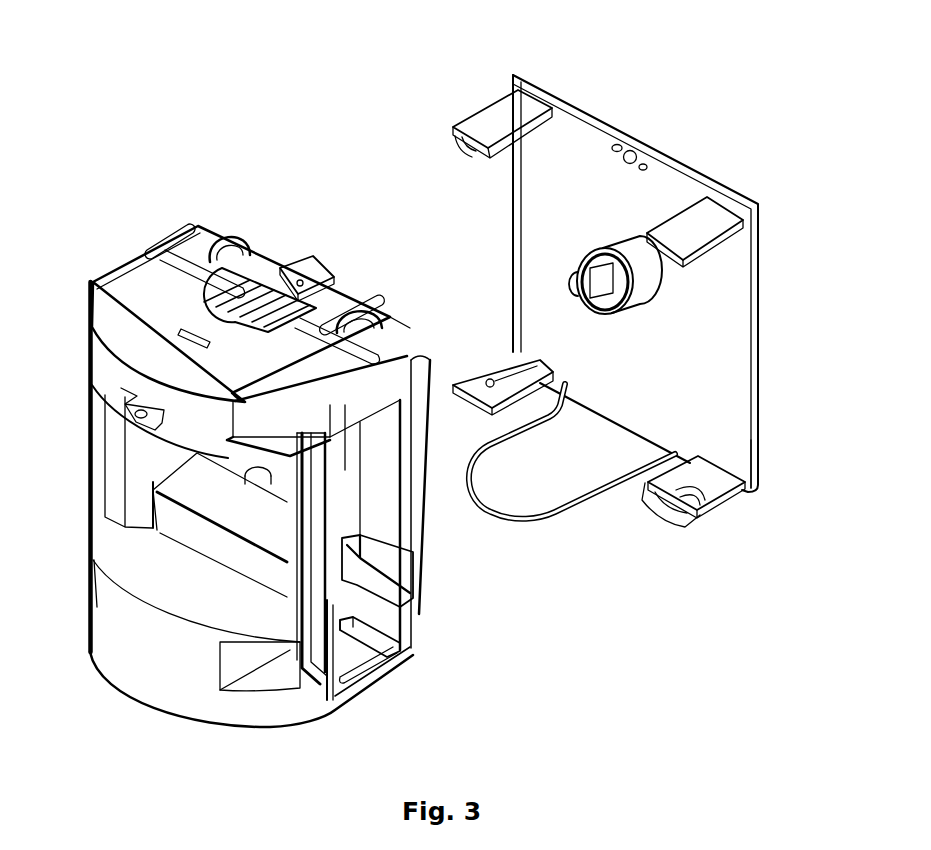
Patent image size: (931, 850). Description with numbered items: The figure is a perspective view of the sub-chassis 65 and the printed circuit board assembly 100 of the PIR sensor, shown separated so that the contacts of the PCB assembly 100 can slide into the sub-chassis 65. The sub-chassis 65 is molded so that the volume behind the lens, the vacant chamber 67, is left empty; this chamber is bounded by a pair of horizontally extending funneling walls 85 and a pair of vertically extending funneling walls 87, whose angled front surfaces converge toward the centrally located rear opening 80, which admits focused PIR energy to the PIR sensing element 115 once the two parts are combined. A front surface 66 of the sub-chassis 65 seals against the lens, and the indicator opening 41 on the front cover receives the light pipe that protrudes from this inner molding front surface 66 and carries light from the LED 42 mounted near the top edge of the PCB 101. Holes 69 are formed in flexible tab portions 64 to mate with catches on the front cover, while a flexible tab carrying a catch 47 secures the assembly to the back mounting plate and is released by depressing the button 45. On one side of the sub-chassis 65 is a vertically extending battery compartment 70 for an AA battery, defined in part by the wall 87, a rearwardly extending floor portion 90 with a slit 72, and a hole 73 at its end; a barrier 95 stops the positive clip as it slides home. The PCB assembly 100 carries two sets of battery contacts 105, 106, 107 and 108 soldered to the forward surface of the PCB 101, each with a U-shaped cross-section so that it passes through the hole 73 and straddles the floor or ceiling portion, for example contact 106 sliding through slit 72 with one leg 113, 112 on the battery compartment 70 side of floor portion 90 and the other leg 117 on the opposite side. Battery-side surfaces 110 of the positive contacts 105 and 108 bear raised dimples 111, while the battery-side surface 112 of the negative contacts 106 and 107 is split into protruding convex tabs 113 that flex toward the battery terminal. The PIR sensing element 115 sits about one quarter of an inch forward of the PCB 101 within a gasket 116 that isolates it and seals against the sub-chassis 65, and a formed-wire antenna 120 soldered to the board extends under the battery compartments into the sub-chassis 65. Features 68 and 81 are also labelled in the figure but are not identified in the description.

The sub-chassis 65 is at (137, 194).
The vacant chamber 67 is at (133, 317).
The slot 68 is at (182, 338).
The holes 69 is at (167, 243).
The flexible tab portions 64 is at (238, 240).
The button 45 is at (262, 280).
The catch 47 is at (312, 263).
The indicator opening 41 is at (122, 406).
The vertically extending funneling walls 87 is at (138, 447).
The horizontally extending funneling walls 85 is at (203, 500).
The rear opening 80 is at (252, 475).
The battery compartment 70 is at (370, 517).
The slit 72 is at (352, 672).
The bracket 81 is at (393, 570).
The holes 73 is at (380, 645).
The floor portion 90 is at (352, 657).
The front surface 66 is at (192, 700).
The barrier 95 is at (345, 440).
The PCB assembly 100 is at (720, 168).
The PCB 101 is at (527, 212).
The battery contact 107 is at (487, 113).
The protruding convex tabs 113 is at (466, 152).
The LED 42 is at (623, 147).
The battery contact 105 is at (690, 227).
The battery-side surfaces 110 is at (665, 252).
The gasket 116 is at (647, 287).
The PIR sensing element 115 is at (640, 315).
The battery contact 108 is at (478, 368).
The raised dimples 111 is at (540, 362).
The antenna 120 is at (507, 440).
The battery-side surface 112 is at (720, 460).
The battery contact 106 is at (717, 507).
The leg 117 is at (650, 512).